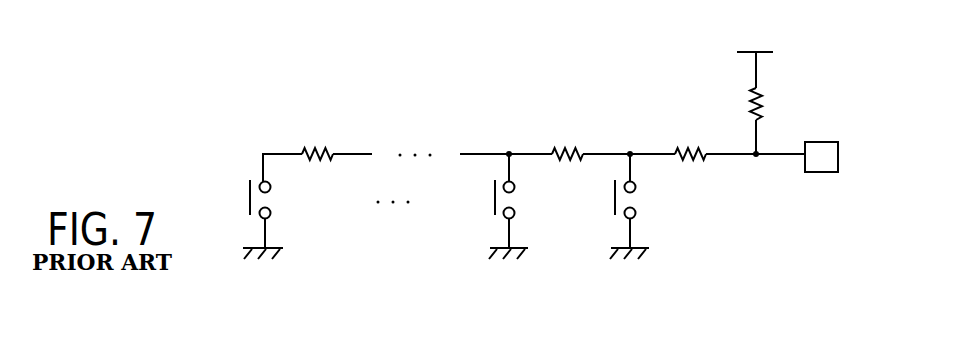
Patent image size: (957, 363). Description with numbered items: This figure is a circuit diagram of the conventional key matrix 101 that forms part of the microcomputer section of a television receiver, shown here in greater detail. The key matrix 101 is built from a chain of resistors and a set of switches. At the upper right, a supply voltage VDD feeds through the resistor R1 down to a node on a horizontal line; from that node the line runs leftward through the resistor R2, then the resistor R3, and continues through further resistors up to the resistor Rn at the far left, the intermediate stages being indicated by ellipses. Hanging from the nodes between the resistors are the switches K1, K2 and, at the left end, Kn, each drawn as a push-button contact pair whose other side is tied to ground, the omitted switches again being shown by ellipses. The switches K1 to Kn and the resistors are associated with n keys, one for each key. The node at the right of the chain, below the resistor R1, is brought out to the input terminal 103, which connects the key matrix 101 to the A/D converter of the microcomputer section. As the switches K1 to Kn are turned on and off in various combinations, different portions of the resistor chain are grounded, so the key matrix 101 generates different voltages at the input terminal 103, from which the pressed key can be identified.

The key matrix 101 is at (507, 136).
The input terminal 103 is at (820, 172).
The resistor R1 is at (773, 105).
The resistor R2 is at (691, 140).
The resistor R3 is at (567, 140).
The resistor Rn is at (317, 140).
The switch K1 is at (615, 200).
The switch K2 is at (495, 200).
The switch Kn is at (250, 200).
The power supply terminal VDD is at (777, 58).